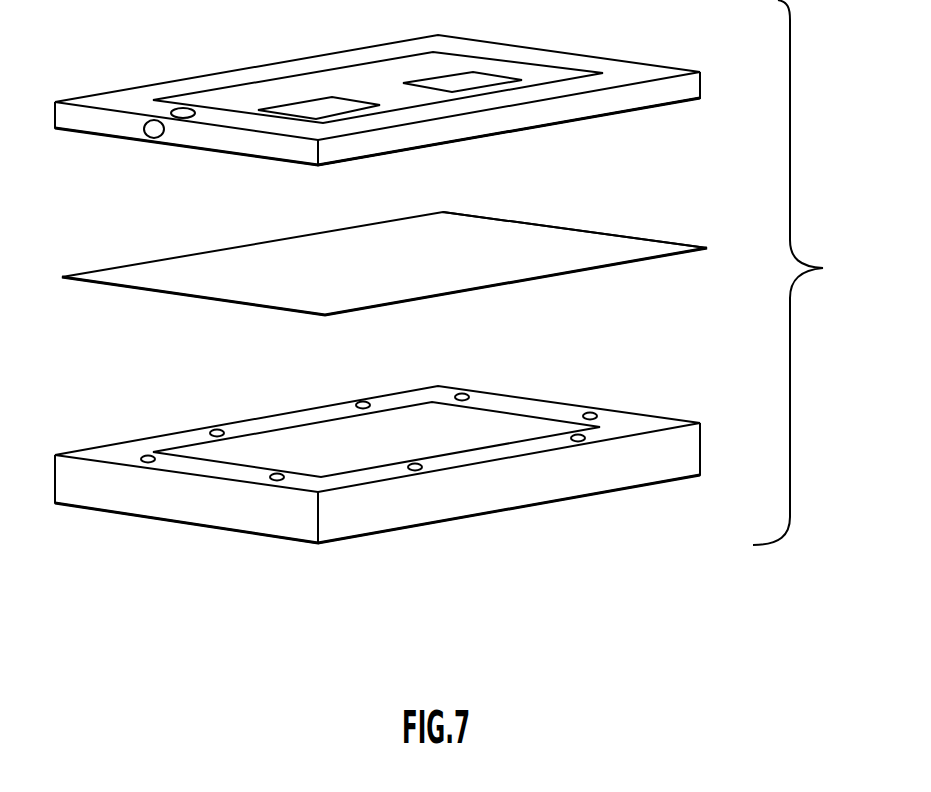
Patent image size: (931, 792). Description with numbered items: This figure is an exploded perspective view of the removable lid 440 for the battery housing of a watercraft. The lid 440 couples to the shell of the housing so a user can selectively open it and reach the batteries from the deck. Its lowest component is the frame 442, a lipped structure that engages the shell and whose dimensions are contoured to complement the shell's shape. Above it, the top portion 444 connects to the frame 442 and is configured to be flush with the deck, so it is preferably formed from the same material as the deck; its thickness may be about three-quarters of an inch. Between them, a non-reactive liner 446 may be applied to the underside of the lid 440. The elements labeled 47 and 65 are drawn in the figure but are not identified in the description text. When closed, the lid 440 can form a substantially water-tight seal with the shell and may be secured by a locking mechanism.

The lid 440 is at (811, 272).
The top portion 444 is at (260, 145).
The non-reactive liner 446 is at (391, 278).
The frame 442 is at (260, 513).
The edge of top plate 47 is at (700, 98).
The surface of middle plate 65 is at (635, 245).